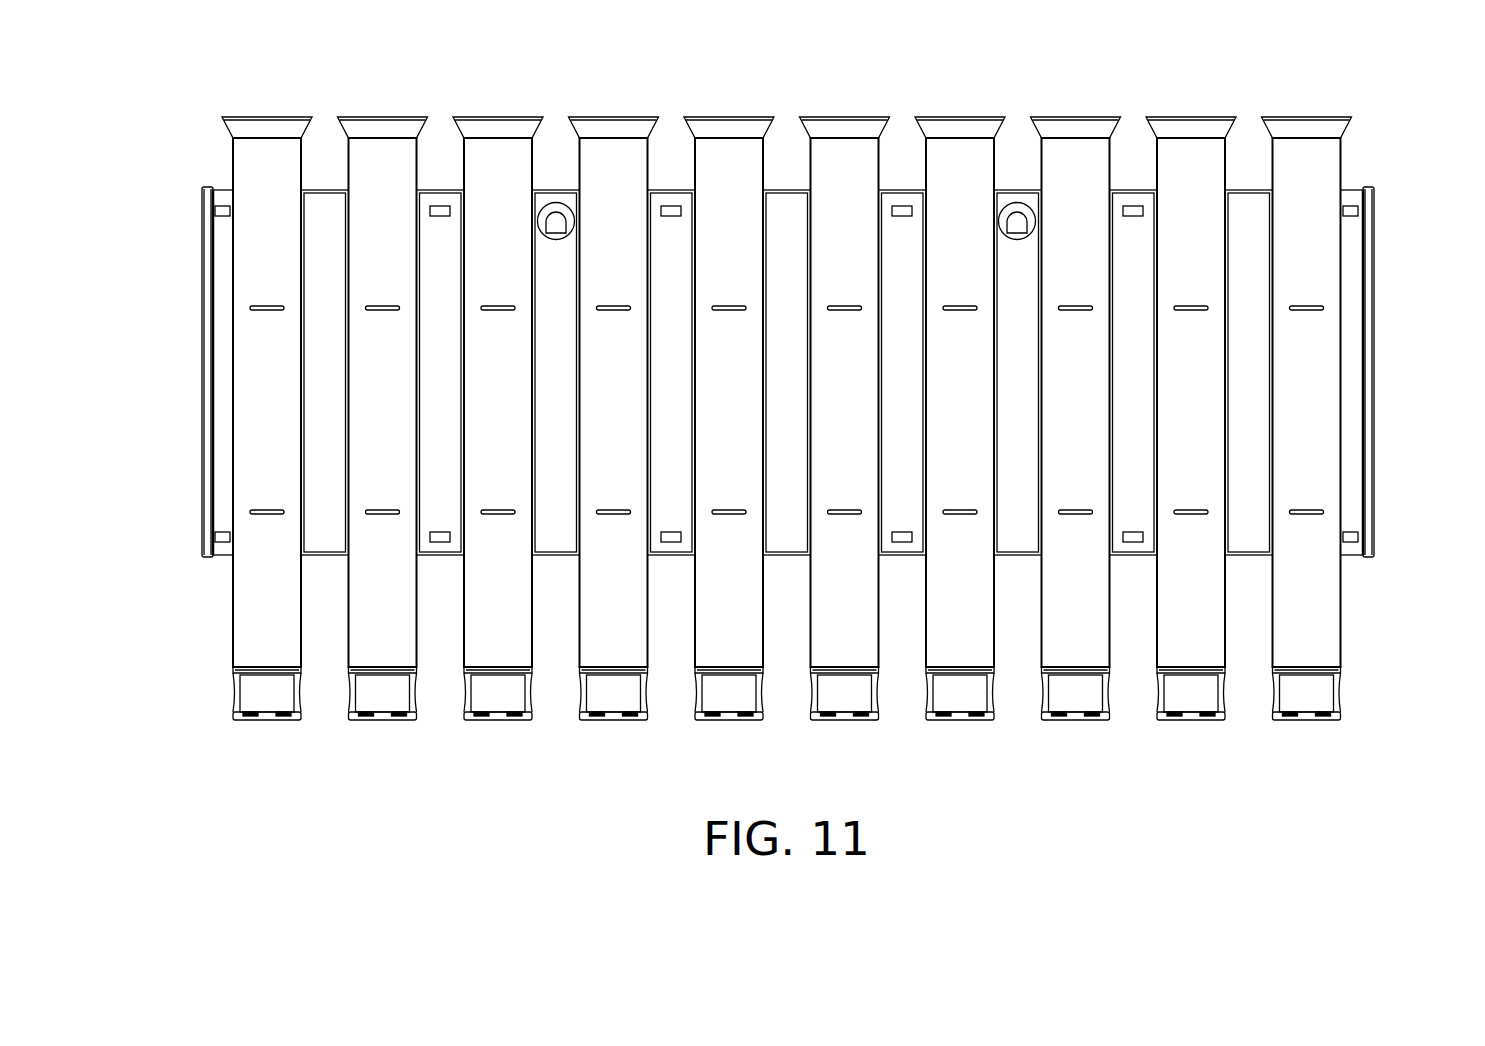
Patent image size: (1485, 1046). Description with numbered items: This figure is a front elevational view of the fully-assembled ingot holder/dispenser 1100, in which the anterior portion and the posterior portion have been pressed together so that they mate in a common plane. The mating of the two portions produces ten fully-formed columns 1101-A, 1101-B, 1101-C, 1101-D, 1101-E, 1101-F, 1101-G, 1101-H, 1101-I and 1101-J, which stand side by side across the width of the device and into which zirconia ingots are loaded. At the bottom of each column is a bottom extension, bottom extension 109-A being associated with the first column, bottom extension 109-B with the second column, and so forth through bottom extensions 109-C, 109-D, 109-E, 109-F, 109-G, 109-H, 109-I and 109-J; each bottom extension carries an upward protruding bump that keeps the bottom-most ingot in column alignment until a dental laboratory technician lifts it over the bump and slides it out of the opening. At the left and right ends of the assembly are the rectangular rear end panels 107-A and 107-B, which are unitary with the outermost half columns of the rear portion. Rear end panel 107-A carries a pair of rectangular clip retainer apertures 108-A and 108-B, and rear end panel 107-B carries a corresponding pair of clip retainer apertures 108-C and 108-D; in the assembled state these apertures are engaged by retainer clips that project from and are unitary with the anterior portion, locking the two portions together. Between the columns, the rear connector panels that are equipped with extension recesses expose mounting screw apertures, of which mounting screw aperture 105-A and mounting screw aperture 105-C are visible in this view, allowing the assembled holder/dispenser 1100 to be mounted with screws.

The fully-assembled ingot holder/dispenser 1100 is at (785, 409).
The fully-formed column 1101-A is at (253, 178).
The fully-formed column 1101-B is at (374, 178).
The fully-formed column 1101-C is at (490, 178).
The fully-formed column 1101-D is at (606, 178).
The fully-formed column 1101-E is at (721, 178).
The fully-formed column 1101-F is at (836, 178).
The fully-formed column 1101-G is at (952, 178).
The fully-formed column 1101-H is at (1068, 178).
The fully-formed column 1101-I is at (1183, 178).
The fully-formed column 1101-J is at (1298, 178).
The bottom extension 109-A is at (267, 718).
The bottom extension 109-B is at (382, 718).
The bottom extension 109-C is at (498, 718).
The bottom extension 109-D is at (614, 718).
The bottom extension 109-E is at (729, 718).
The bottom extension 109-F is at (844, 718).
The bottom extension 109-G is at (960, 718).
The bottom extension 109-H is at (1076, 718).
The bottom extension 109-I is at (1191, 718).
The bottom extension 109-J is at (1306, 718).
The rear end panel 107-A is at (222, 378).
The rear end panel 107-B is at (1352, 378).
The clip retainer aperture 108-A is at (206, 211).
The clip retainer aperture 108-B is at (206, 537).
The clip retainer aperture 108-C is at (1370, 211).
The clip retainer aperture 108-D is at (1370, 537).
The mounting screw aperture 105-A is at (541, 227).
The mounting screw aperture 105-C is at (1040, 227).